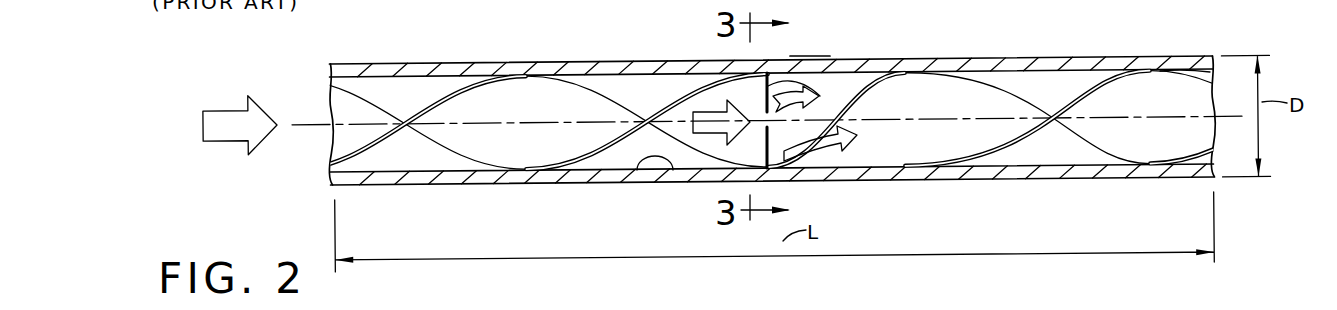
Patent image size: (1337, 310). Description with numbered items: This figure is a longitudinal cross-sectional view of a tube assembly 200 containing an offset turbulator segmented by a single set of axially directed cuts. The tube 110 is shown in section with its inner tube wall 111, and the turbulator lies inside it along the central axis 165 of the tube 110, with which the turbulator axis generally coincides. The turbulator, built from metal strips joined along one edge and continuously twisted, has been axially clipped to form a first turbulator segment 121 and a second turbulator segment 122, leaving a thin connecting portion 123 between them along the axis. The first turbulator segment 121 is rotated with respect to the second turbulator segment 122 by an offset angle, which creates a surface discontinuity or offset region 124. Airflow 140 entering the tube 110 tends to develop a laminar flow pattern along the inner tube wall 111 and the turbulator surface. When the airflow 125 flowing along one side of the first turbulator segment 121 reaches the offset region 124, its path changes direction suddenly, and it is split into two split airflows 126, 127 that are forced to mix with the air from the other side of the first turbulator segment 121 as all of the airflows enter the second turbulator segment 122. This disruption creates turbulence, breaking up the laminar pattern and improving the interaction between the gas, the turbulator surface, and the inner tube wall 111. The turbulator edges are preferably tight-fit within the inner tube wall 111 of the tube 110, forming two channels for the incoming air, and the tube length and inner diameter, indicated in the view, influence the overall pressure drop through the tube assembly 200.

The tube 110 is at (965, 58).
The inner tube wall 111 is at (640, 174).
The first turbulator segment 121 is at (562, 142).
The second turbulator segment 122 is at (948, 140).
The connecting portion 123 is at (770, 122).
The offset region 124 is at (806, 50).
The airflow 125 is at (723, 134).
The split airflow 126 is at (772, 95).
The split airflow 127 is at (830, 147).
The airflow 140 is at (228, 143).
The central axis 165 is at (1112, 114).
The tube assembly 200 is at (1143, 20).